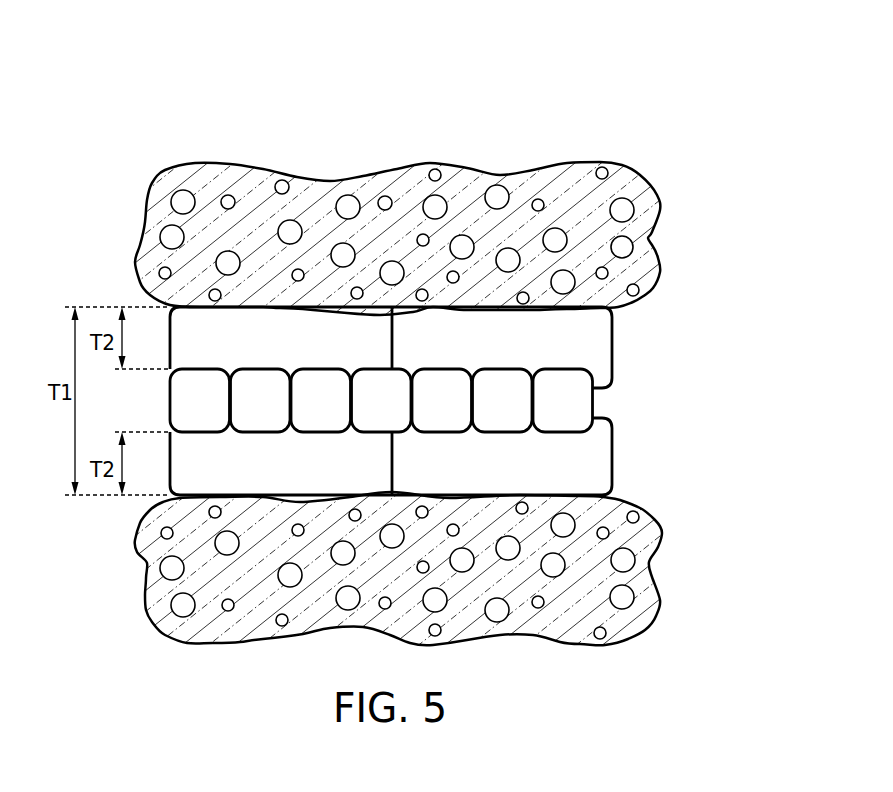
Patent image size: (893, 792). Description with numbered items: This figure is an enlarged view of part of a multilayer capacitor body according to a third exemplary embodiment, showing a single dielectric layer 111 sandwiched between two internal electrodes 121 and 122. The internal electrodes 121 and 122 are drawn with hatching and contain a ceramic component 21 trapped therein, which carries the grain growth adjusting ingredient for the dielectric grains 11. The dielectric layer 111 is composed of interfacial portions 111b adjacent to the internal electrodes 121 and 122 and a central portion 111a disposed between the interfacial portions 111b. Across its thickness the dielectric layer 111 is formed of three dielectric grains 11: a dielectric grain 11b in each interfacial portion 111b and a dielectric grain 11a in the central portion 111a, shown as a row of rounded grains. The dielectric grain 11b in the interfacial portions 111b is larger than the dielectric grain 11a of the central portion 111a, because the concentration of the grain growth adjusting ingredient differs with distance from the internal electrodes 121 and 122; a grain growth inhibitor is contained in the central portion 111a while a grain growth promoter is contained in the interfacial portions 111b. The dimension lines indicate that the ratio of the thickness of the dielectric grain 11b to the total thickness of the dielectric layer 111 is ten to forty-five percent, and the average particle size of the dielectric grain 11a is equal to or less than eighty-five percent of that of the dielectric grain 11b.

The dielectric grains 11 is at (510, 65).
The dielectric grain of the central portion 11a is at (441, 250).
The dielectric grain in the interfacial portions 11b is at (441, 281).
The dielectric layer 111 is at (715, 318).
The central portion 111a is at (580, 400).
The interfacial portions 111b is at (580, 335).
The internal electrode 121 is at (642, 572).
The internal electrode 122 is at (628, 178).
The ceramic component 21 is at (633, 246).